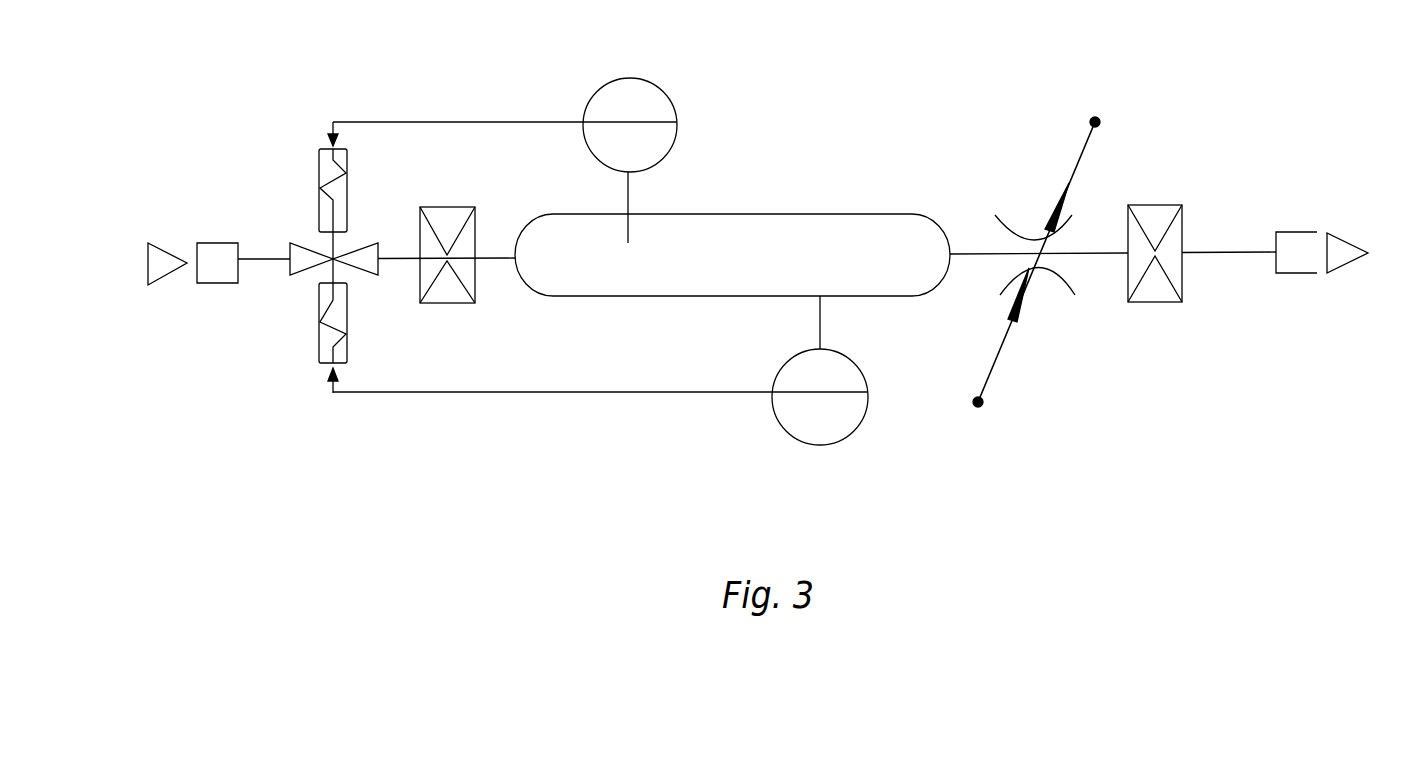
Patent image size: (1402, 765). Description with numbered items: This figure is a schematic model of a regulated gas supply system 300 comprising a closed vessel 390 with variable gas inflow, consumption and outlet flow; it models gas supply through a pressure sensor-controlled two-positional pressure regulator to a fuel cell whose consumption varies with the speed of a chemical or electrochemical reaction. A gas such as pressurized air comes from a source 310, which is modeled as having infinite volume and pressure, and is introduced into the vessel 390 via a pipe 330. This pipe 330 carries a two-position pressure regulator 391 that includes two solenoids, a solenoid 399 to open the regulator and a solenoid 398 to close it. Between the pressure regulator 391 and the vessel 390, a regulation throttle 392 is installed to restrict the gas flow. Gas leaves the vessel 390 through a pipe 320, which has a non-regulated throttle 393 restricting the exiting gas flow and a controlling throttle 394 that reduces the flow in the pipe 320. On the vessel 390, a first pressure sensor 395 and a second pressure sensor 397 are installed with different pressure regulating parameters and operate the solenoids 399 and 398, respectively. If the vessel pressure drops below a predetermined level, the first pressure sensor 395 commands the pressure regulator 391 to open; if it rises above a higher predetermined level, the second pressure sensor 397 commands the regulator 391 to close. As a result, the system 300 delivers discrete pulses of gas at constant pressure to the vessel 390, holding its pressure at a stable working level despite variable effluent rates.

The regulated gas supply system 300 is at (465, 582).
The source 310 is at (144, 261).
The pipe 320 is at (1238, 252).
The pipe 330 is at (275, 259).
The vessel 390 is at (801, 217).
The two-position pressure regulator 391 is at (350, 264).
The regulation throttle 392 is at (476, 286).
The non-regulated throttle 393 is at (1155, 208).
The controlling throttle 394 is at (1015, 237).
The first pressure sensor 395 is at (580, 100).
The second pressure sensor 397 is at (866, 406).
The solenoid 398 is at (315, 353).
The solenoid 399 is at (315, 150).